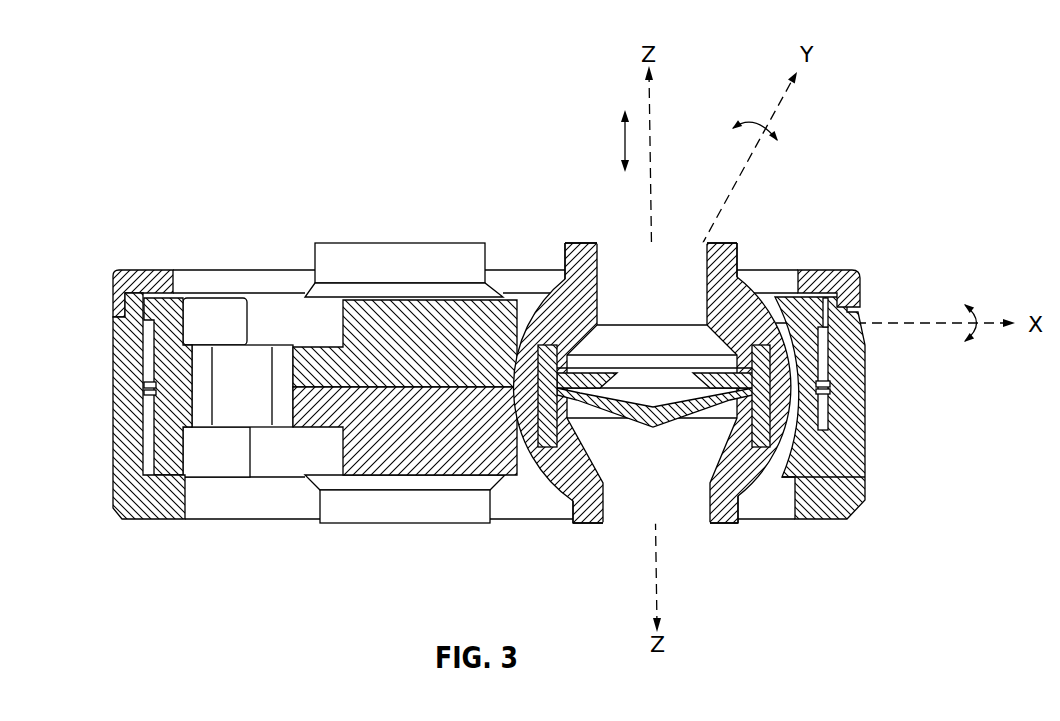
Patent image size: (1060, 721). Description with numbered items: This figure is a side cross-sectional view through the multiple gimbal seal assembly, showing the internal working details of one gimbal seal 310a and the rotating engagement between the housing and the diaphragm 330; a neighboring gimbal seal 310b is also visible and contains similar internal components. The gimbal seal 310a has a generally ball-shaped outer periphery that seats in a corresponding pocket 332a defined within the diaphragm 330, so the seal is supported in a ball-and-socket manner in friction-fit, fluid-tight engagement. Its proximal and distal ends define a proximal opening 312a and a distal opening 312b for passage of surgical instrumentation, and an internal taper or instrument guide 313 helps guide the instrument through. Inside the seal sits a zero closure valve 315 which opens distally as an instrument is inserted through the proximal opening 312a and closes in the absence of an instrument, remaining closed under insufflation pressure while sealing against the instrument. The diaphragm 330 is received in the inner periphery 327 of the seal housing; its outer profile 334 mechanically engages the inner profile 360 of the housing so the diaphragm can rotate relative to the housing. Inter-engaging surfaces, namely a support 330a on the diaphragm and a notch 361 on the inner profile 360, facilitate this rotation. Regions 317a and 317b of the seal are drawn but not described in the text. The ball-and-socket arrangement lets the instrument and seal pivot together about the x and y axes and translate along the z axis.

The gimbal seal 310a is at (733, 243).
The gimbal seal 310b is at (333, 262).
The proximal opening 312a is at (630, 238).
The distal opening 312b is at (667, 530).
The instrument guide 313 is at (673, 350).
The zero closure valve 315 is at (503, 322).
The upper neck 317a is at (722, 265).
The lower neck 317b is at (740, 523).
The inner periphery 327 is at (832, 330).
The diaphragm 330 is at (385, 457).
The support 330a is at (147, 473).
The pocket 332a is at (508, 425).
The outer profile 334 is at (148, 430).
The inner profile 360 is at (155, 385).
The notch 361 is at (163, 390).